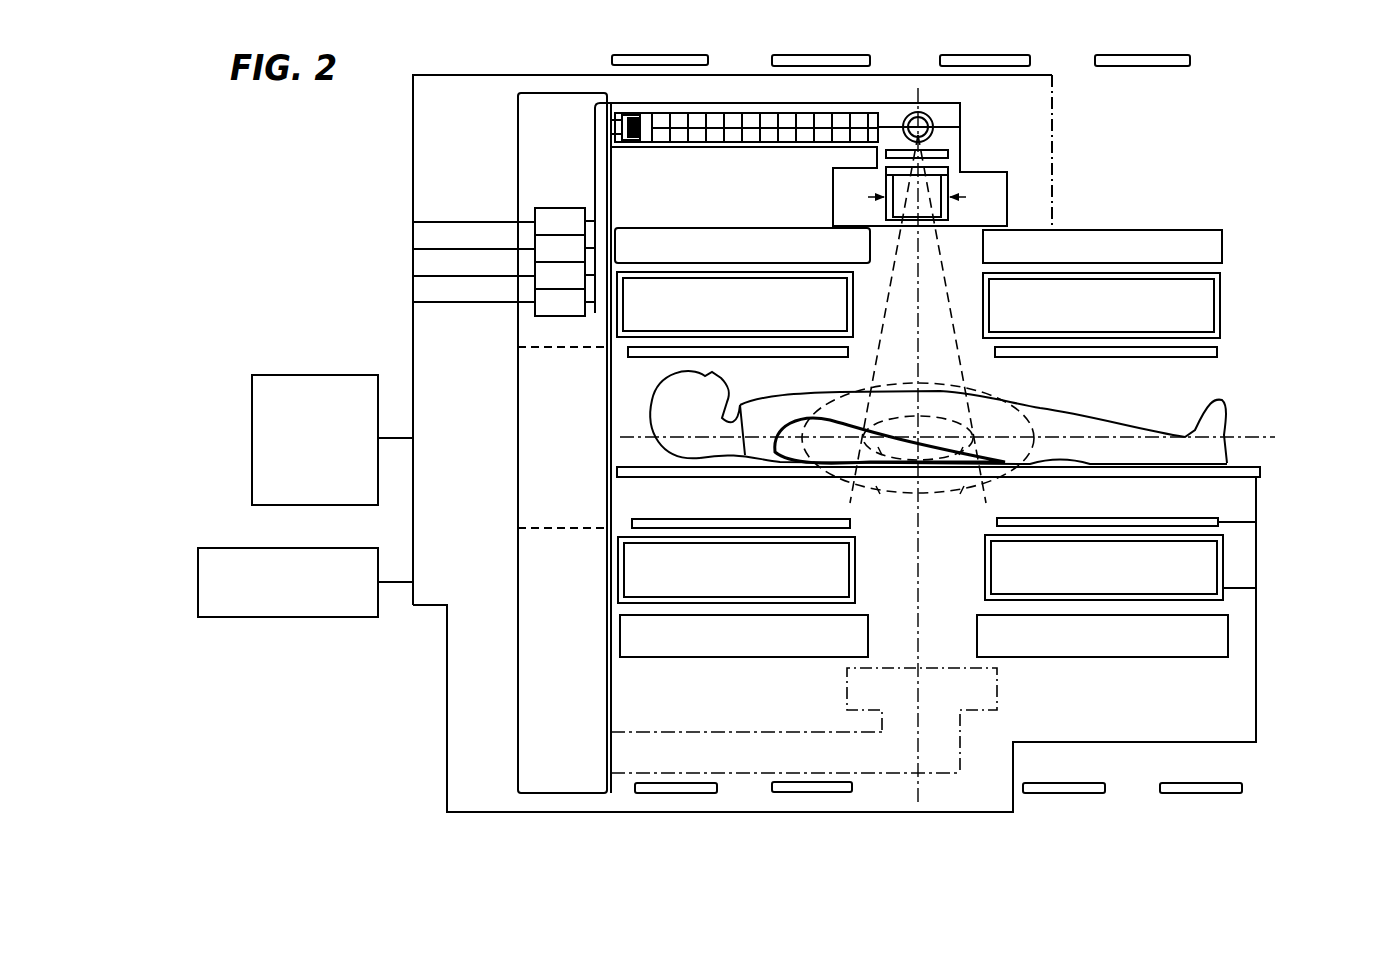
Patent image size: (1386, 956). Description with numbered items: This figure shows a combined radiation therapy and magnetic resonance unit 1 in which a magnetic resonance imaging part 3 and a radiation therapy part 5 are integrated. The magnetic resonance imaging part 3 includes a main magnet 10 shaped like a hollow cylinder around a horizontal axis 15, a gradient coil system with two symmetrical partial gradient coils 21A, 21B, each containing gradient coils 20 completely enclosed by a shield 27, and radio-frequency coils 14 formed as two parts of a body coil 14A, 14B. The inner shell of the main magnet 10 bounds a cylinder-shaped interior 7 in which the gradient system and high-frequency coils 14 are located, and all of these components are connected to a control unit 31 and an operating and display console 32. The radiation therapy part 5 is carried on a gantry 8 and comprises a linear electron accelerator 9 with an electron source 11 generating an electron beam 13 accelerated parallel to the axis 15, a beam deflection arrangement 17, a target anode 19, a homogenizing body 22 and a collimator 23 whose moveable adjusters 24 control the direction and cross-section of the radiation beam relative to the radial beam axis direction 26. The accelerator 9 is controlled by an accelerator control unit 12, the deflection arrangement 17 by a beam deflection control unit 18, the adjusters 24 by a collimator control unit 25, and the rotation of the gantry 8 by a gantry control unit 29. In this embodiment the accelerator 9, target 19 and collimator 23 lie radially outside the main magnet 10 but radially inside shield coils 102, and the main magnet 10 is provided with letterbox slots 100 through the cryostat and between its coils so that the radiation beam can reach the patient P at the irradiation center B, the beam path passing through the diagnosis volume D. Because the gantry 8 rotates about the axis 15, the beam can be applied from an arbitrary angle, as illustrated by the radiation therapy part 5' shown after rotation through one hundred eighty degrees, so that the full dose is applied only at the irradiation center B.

The combined radiation therapy and magnetic resonance unit 1 is at (408, 775).
The magnetic resonance imaging part 3 is at (1258, 252).
The radiation therapy part 5 is at (802, 444).
The radiation therapy part after rotation 5' is at (812, 720).
The cylinder-shaped interior 7 is at (1224, 373).
The gantry 8 is at (518, 613).
The linear electron accelerator 9 is at (896, 124).
The main magnet 10 is at (1222, 241).
The electron source 11 is at (637, 143).
The accelerator control unit 12 is at (400, 168).
The electron beam 13 is at (710, 143).
The radio-frequency coils 14 is at (670, 366).
The first part of body coil 14A is at (748, 347).
The second part of body coil 14B is at (1112, 358).
The horizontal axis 15 is at (1272, 437).
The beam deflection arrangement 17 is at (955, 128).
The beam deflection control unit 18 is at (362, 243).
The target anode 19 is at (948, 154).
The gradient coils 20 is at (617, 322).
The first partial gradient coil 21A is at (812, 348).
The second partial gradient coil 21B is at (1102, 263).
The homogenizing body 22 is at (948, 172).
The collimator 23 is at (932, 226).
The moveable adjusters 24 is at (886, 188).
The collimator control unit 25 is at (330, 290).
The radial beam axis direction 26 is at (920, 539).
The shield 27 is at (626, 348).
The gantry control unit 29 is at (470, 337).
The control unit 31 is at (347, 375).
The operating and display console 32 is at (332, 617).
The letterbox slots 100 is at (880, 238).
The shield coils 102 is at (1208, 64).
The irradiation center B is at (918, 457).
The diagnosis volume D is at (848, 483).
The patient P is at (1168, 437).